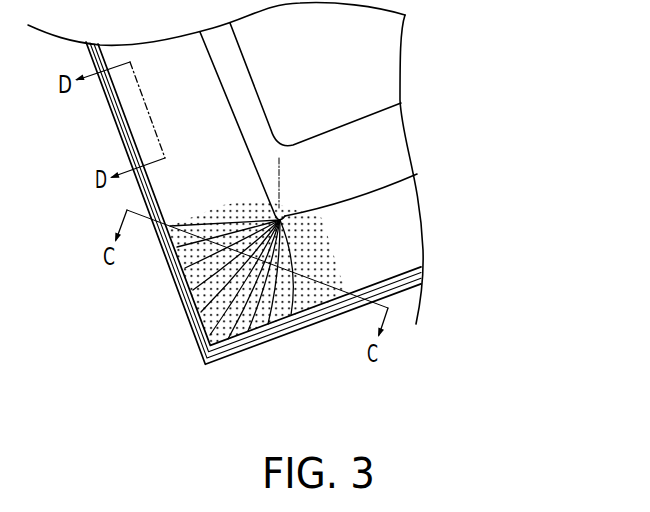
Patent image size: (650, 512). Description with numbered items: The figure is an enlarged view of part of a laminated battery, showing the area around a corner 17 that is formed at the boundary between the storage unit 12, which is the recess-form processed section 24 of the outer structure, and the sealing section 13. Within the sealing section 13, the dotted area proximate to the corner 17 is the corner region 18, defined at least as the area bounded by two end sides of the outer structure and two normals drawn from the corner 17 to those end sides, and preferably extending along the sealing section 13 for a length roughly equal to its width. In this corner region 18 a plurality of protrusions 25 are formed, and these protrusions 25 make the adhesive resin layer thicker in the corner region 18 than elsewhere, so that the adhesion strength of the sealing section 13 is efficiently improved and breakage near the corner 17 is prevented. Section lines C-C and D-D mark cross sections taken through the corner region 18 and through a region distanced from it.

The storage unit 12 is at (275, 163).
The recess-form processed section 24 is at (377, 54).
The sealing section 13 is at (403, 255).
The corner 17 is at (286, 216).
The corner region 18 is at (185, 250).
The protrusions 25 is at (273, 290).